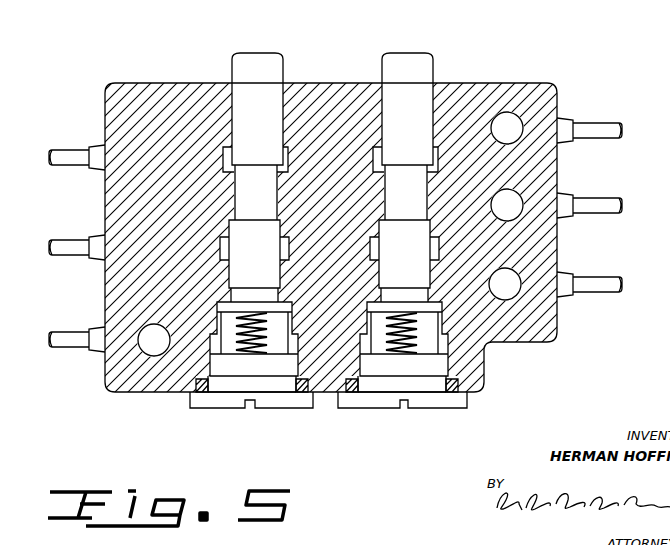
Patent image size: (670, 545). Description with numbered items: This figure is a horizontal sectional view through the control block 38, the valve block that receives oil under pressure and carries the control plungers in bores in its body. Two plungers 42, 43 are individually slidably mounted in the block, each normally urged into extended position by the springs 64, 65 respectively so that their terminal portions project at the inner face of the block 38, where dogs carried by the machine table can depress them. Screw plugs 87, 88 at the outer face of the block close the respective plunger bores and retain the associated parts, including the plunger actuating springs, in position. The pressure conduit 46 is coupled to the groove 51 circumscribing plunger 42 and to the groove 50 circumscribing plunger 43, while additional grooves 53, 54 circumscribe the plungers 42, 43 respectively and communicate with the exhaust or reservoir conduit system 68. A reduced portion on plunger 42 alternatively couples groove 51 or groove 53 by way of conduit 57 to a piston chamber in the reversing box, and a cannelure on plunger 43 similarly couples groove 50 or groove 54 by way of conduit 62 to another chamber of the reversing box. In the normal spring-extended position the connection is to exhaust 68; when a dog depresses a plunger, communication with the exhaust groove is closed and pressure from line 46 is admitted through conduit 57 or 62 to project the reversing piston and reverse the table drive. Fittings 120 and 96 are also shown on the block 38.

The control block 38 is at (550, 70).
The plunger 42 is at (274, 34).
The plunger 43 is at (428, 36).
The groove 53 is at (223, 147).
The groove 54 is at (373, 147).
The groove 51 is at (226, 253).
The groove 50 is at (438, 253).
The spring 64 is at (242, 346).
The spring 65 is at (396, 348).
The screw plug 87 is at (282, 402).
The screw plug 88 is at (447, 402).
The exhaust or reservoir conduit system 68 is at (52, 154).
The pressure conduit 46 is at (53, 243).
The conduit 57 is at (50, 343).
The port fitting 120 is at (637, 104).
The conduit 62 is at (627, 180).
The port fitting 96 is at (626, 259).